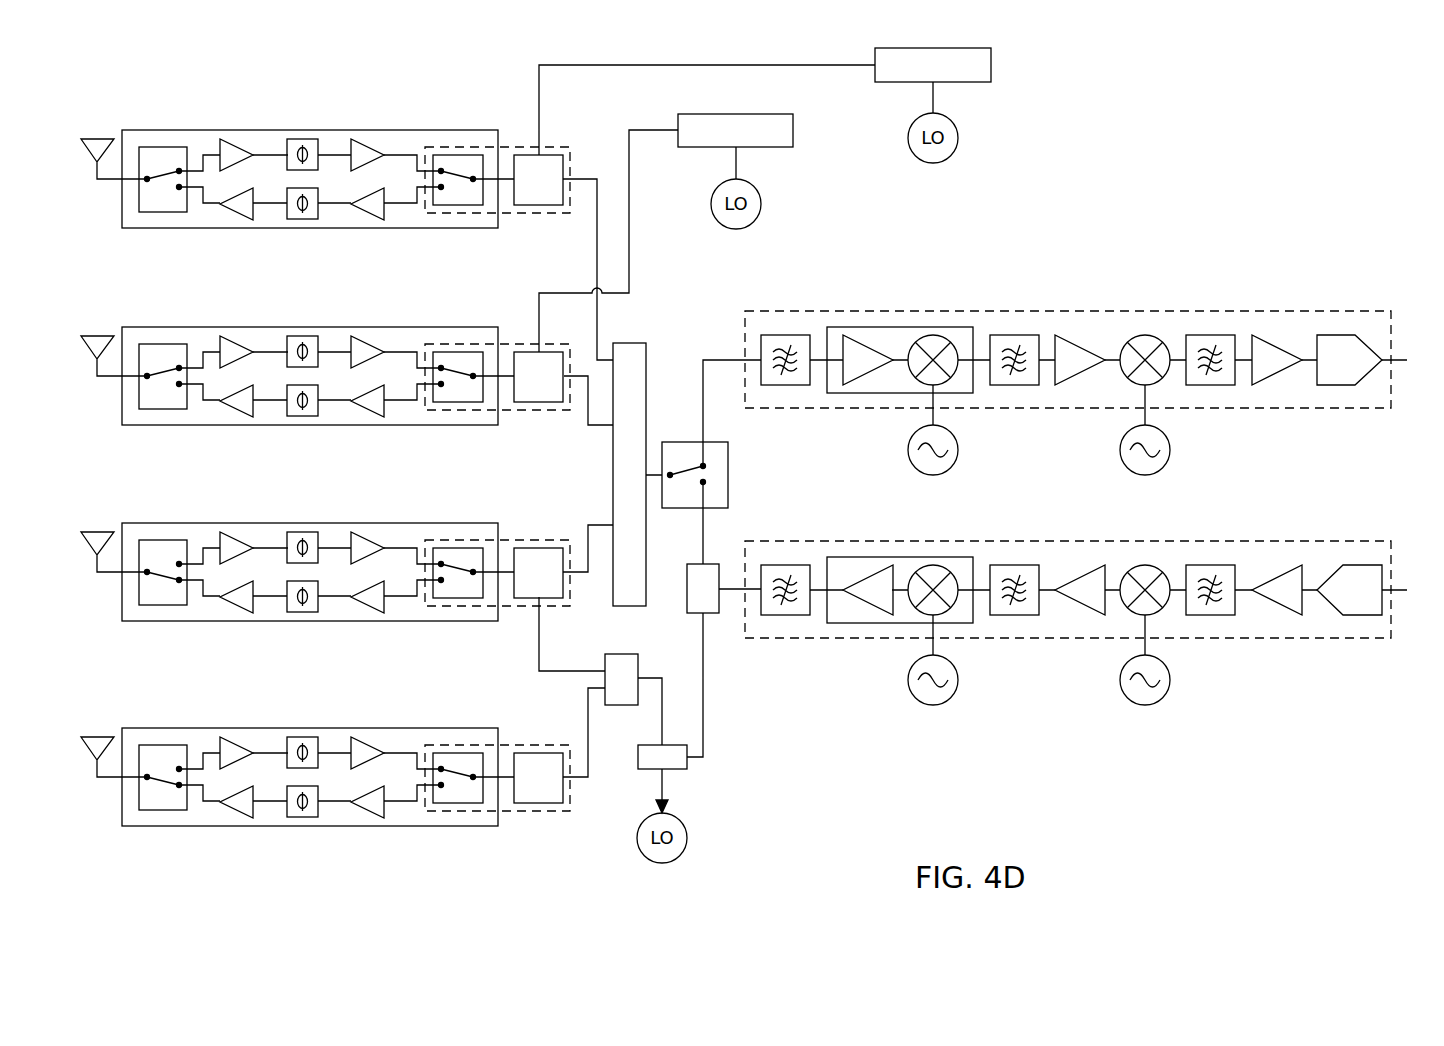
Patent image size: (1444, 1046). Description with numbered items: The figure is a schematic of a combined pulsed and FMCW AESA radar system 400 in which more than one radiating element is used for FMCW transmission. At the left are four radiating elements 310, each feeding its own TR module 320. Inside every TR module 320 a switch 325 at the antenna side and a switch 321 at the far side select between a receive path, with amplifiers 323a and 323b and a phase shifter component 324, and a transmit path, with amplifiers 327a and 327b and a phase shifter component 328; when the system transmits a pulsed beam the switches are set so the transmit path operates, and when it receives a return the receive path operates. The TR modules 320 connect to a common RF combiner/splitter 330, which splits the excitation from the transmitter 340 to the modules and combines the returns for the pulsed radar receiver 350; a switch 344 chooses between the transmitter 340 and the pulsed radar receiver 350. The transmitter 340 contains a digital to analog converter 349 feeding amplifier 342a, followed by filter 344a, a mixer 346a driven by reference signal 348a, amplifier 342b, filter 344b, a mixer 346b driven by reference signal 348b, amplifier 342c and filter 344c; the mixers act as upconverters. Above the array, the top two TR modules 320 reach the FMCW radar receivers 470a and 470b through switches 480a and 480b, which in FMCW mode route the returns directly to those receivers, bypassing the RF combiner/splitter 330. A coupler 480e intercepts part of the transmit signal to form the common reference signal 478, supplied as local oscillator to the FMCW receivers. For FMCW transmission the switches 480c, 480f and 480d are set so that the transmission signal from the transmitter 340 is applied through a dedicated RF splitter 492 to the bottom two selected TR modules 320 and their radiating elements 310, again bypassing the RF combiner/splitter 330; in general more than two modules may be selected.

The radiating element 310 is at (113, 435).
The TR module 320 is at (310, 492).
The switch 321 is at (497, 448).
The amplifier 323a is at (263, 431).
The amplifier 323b is at (396, 431).
The phase shifter component 324 is at (326, 430).
The switch 325 is at (162, 451).
The amplifier 327a is at (395, 525).
The amplifier 327b is at (264, 525).
The phase shifter component 328 is at (330, 525).
The RF combiner/splitter 330 is at (622, 343).
The transmitter 340 is at (1358, 541).
The amplifier 342a is at (1270, 385).
The amplifier 342b is at (1075, 385).
The amplifier 342c is at (863, 385).
The switch 344 is at (712, 442).
The filter 344a is at (1210, 335).
The filter 344b is at (1014, 335).
The filter 344c is at (785, 335).
The mixer 346a is at (1145, 335).
The mixer 346b is at (933, 335).
The reference signal 348a is at (1160, 473).
The reference signal 348b is at (948, 473).
The digital to analog converter 349 is at (1335, 385).
The pulsed radar receiver 350 is at (1358, 311).
The combined pulsed and FMCW AESA radar system 400 is at (1160, 188).
The FMCW radar receiver 470a is at (973, 82).
The FMCW radar receiver 470b is at (786, 148).
The common reference signal 478 is at (687, 838).
The switch 480a is at (522, 155).
The switch 480b is at (522, 352).
The switch 480c is at (522, 548).
The switch 480d is at (710, 613).
The coupler 480e is at (678, 769).
The switch 480f is at (522, 753).
The RF splitter 492 is at (623, 654).